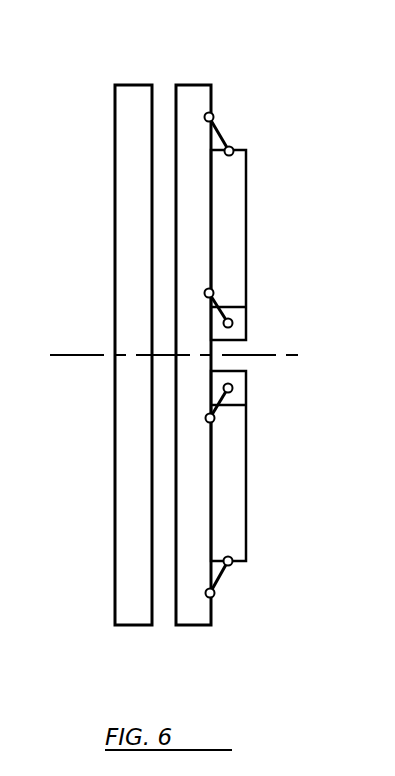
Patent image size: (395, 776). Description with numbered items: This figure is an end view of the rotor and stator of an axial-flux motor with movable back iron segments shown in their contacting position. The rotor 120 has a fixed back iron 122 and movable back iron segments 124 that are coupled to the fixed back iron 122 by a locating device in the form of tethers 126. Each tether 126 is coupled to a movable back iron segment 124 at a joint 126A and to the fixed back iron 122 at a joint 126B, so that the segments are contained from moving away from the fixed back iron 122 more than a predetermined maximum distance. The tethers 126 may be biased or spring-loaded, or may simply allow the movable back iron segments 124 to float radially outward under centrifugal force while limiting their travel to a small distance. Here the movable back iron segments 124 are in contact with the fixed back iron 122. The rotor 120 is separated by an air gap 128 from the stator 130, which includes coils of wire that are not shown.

The rotor 120 is at (189, 352).
The fixed back iron 122 is at (193, 92).
The movable back iron segments 124 is at (232, 193).
The tether 126 is at (223, 134).
The joint 126A is at (206, 419).
The joint 126B is at (233, 388).
The air gap 128 is at (163, 92).
The stator 130 is at (133, 571).